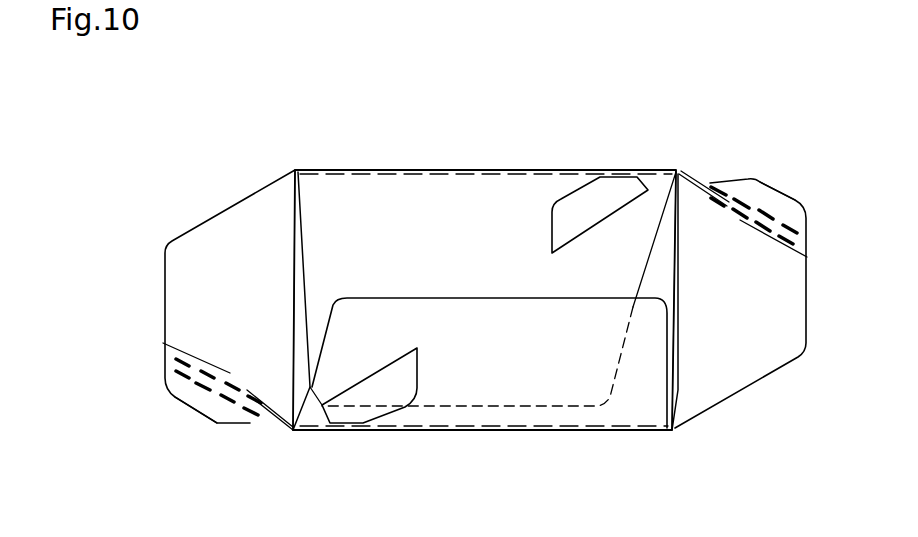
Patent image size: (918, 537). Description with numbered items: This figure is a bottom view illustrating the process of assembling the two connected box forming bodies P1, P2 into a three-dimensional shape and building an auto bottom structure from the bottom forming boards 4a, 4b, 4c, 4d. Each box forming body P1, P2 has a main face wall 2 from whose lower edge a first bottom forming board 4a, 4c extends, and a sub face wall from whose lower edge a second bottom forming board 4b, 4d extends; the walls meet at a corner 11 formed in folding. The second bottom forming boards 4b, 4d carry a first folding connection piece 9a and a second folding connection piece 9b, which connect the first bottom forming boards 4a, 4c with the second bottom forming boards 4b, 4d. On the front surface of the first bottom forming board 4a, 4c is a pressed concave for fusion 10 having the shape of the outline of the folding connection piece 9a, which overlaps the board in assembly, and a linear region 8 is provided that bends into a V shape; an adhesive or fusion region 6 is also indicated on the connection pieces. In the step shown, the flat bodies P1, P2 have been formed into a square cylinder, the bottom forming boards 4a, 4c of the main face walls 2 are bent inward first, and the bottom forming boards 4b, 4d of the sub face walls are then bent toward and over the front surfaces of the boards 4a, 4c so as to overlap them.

The main face wall 2 is at (493, 170).
The first bottom forming board 4a is at (413, 238).
The second bottom forming board 4b is at (752, 345).
The first bottom forming board 4c is at (553, 376).
The second bottom forming board 4d is at (240, 287).
The adhesive portion 6 is at (227, 377).
The linear region bendable into a shape of a V 8 is at (730, 183).
The first folding connection piece 9a is at (771, 200).
The second folding connection piece 9b is at (195, 403).
The concave for fusion 10 is at (603, 197).
The corner 11 is at (682, 170).
The first box forming body P1 is at (412, 139).
The second box forming body P2 is at (570, 501).